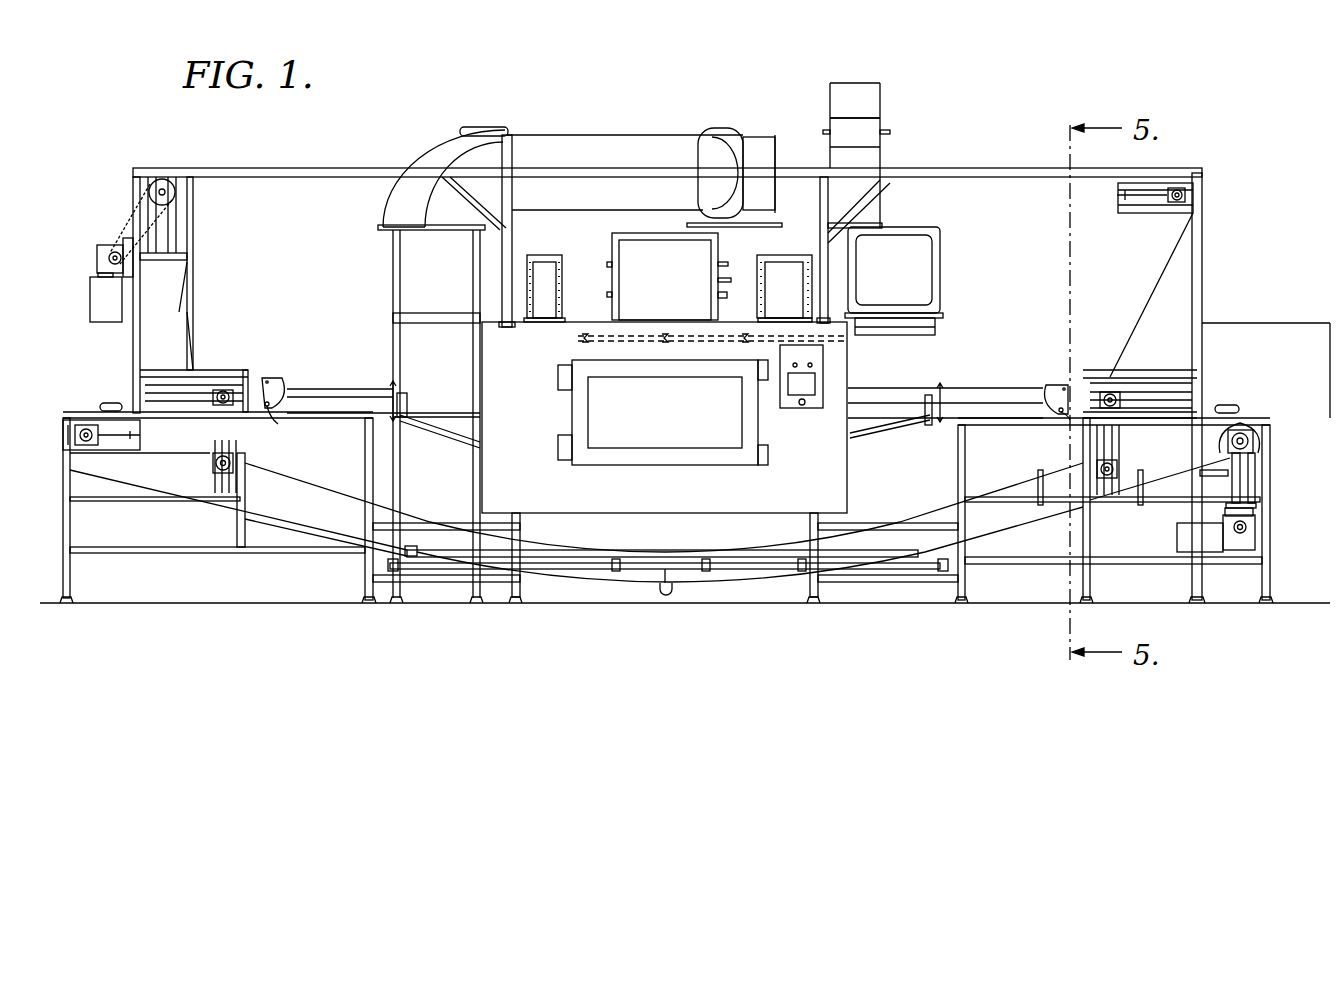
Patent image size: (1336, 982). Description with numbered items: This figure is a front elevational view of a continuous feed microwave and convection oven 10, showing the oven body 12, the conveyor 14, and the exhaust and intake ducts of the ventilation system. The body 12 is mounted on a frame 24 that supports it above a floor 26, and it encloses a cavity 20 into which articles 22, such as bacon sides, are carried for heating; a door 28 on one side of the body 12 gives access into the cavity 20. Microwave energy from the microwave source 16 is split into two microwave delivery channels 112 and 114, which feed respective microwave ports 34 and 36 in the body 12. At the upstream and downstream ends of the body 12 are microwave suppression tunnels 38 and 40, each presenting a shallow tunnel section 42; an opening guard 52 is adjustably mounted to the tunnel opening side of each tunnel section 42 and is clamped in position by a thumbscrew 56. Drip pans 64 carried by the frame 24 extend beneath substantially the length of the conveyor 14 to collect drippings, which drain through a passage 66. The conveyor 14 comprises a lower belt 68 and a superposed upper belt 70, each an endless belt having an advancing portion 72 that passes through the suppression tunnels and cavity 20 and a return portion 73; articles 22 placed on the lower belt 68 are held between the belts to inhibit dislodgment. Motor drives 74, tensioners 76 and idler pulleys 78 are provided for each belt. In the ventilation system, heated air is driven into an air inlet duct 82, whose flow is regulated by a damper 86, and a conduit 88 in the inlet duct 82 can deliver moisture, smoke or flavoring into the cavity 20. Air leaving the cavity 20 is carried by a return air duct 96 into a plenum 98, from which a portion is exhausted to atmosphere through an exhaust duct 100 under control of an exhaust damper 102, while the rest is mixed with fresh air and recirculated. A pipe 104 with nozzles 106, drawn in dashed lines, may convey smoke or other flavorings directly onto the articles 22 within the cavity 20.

The continuous feed microwave and convection oven 10 is at (983, 135).
The body 12 is at (647, 520).
The conveyor 14 is at (155, 462).
The microwave source 16 is at (1275, 322).
The cavity 20 is at (513, 487).
The articles 22 is at (112, 402).
The frame 24 is at (965, 580).
The floor 26 is at (762, 608).
The door 28 is at (700, 460).
The microwave port 34 is at (786, 318).
The microwave port 36 is at (560, 318).
The microwave suppression tunnel 38 is at (957, 388).
The microwave suppression tunnel 40 is at (300, 388).
The tunnel section 42 is at (346, 386).
The opening guard 52 is at (270, 378).
The thumbscrew 56 is at (272, 407).
The drip pans 64 is at (288, 527).
The passage 66 is at (673, 590).
The lower belt 68 is at (1010, 492).
The upper belt 70 is at (1178, 262).
The advancing portion 72 is at (492, 410).
The return portion 73 is at (310, 486).
The motor drives 74 is at (148, 186).
The tensioners 76 is at (80, 425).
The idler pulleys 78 is at (226, 383).
The air inlet duct 82 is at (640, 232).
The damper 86 is at (607, 265).
The conduit 88 is at (716, 297).
The return air duct 96 is at (408, 333).
The plenum 98 is at (799, 232).
The exhaust duct 100 is at (875, 160).
The exhaust damper 102 is at (887, 124).
The pipe 104 is at (942, 333).
The nozzles 106 is at (580, 341).
The microwave delivery channel 112 is at (780, 268).
The microwave delivery channel 114 is at (546, 272).